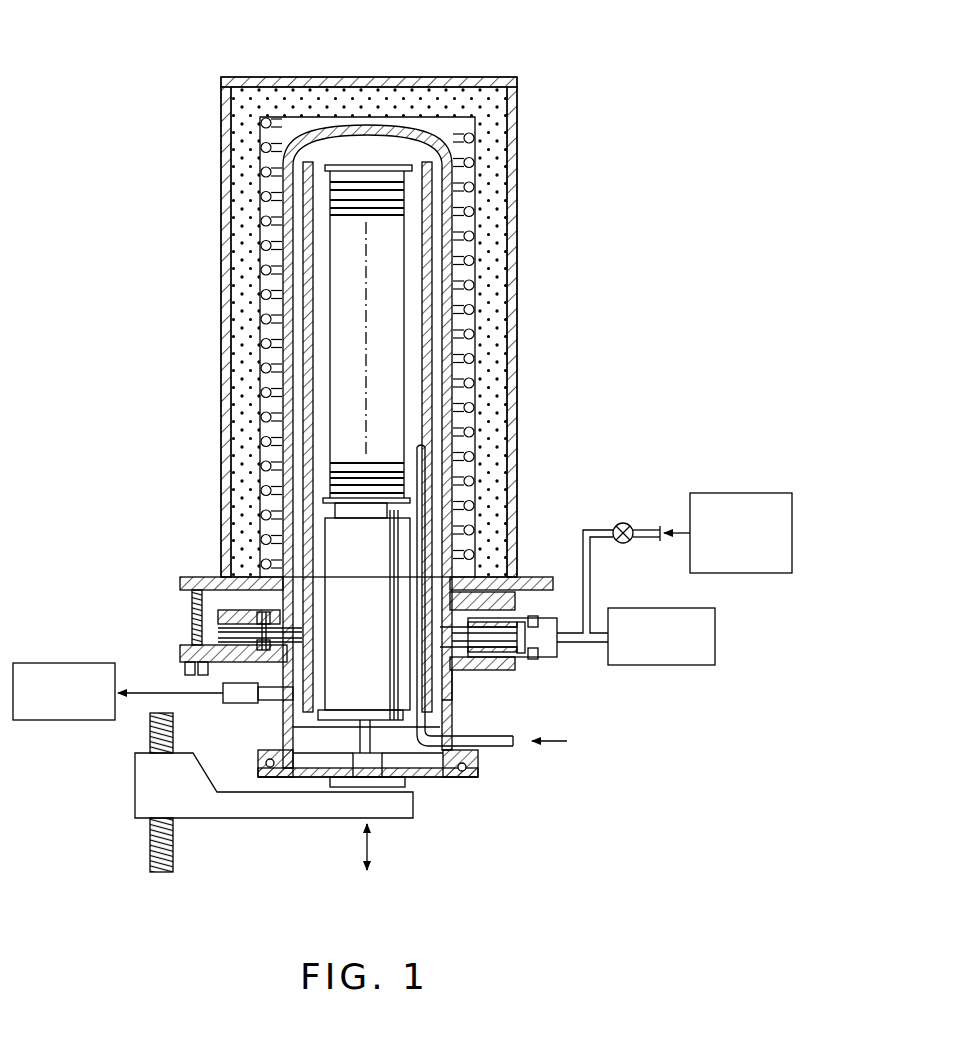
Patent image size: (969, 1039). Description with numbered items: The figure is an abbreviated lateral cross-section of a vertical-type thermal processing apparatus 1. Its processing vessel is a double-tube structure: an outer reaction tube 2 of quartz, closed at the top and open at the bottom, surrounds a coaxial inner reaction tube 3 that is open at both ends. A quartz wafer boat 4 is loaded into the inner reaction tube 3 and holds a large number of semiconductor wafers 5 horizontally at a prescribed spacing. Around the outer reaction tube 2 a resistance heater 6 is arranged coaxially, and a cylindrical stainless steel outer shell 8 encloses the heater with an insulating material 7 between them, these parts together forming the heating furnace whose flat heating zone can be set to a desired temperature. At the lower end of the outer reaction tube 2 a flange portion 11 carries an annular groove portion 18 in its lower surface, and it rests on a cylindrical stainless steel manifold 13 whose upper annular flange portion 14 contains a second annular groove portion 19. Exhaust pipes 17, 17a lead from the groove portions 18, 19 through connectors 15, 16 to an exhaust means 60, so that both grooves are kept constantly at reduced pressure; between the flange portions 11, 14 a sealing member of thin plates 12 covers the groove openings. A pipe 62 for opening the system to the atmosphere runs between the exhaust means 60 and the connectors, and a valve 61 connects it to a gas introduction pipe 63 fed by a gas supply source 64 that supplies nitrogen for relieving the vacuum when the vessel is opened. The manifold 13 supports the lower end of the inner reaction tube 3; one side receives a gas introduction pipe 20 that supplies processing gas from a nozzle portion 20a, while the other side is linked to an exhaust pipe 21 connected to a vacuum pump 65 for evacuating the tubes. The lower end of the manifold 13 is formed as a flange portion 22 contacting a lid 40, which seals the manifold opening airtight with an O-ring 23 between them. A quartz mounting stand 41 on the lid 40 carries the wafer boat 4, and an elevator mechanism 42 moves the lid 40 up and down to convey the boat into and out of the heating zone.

The vertical-type thermal processing apparatus 1 is at (562, 50).
The outer reaction tube 2 is at (455, 245).
The inner reaction tube 3 is at (430, 212).
The wafer boat 4 is at (372, 165).
The semiconductor wafers 5 is at (345, 182).
The resistance heater 6 is at (262, 174).
The insulating material 7 is at (247, 237).
The cylindrical outer shell 8 is at (222, 320).
The flange portion 11 is at (492, 612).
The thin plates 12 is at (221, 637).
The cylindrical manifold 13 is at (450, 697).
The annular flange portion 14 is at (488, 662).
The connector 15 is at (538, 616).
The connector 16 is at (534, 660).
The exhaust pipe 17 is at (520, 618).
The exhaust pipe 17a is at (524, 660).
The annular groove portion 18 is at (265, 620).
The annular groove portion 19 is at (268, 646).
The gas introduction pipe 20 is at (510, 748).
The nozzle portion 20a is at (422, 498).
The exhaust pipe 21 is at (238, 703).
The flange portion 22 is at (485, 750).
The O-ring 23 is at (453, 772).
The lid 40 is at (418, 775).
The mounting stand 41 is at (383, 617).
The elevator mechanism 42 is at (280, 818).
The exhaust means 60 is at (716, 640).
The valve 61 is at (622, 523).
The pipe 62 is at (592, 583).
The gas introduction pipe 63 is at (648, 527).
The gas supply source 64 is at (740, 493).
The vacuum pump 65 is at (63, 663).